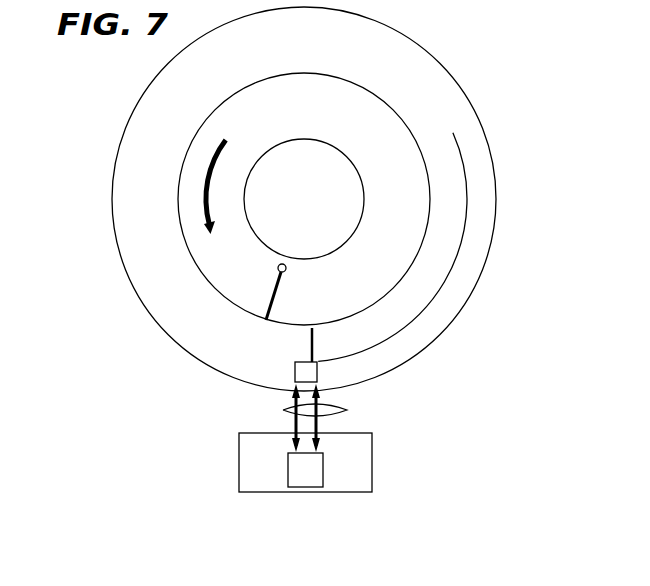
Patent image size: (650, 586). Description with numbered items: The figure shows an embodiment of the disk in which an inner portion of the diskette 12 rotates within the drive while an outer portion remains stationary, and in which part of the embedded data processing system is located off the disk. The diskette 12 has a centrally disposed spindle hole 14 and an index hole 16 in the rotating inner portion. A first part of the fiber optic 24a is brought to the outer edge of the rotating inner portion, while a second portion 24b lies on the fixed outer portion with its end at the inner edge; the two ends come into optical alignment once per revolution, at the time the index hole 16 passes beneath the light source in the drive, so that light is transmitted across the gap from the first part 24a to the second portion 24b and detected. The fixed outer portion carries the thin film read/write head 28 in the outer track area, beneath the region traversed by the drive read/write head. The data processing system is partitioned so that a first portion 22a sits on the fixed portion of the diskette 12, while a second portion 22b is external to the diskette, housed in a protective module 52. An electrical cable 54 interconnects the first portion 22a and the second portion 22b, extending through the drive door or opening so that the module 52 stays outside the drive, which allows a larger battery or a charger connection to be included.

The diskette 12 is at (397, 111).
The spindle hole 14 is at (362, 186).
The index hole 16 is at (285, 263).
The first part of the fiber optic 24a is at (275, 297).
The second portion of the fiber optic 24b is at (312, 345).
The first portion of the data processing system 22a is at (295, 376).
The second portion of the data processing system 22b is at (307, 487).
The protective module 52 is at (372, 467).
The electrical cable 54 is at (347, 410).
The TFRWH 28 is at (462, 238).